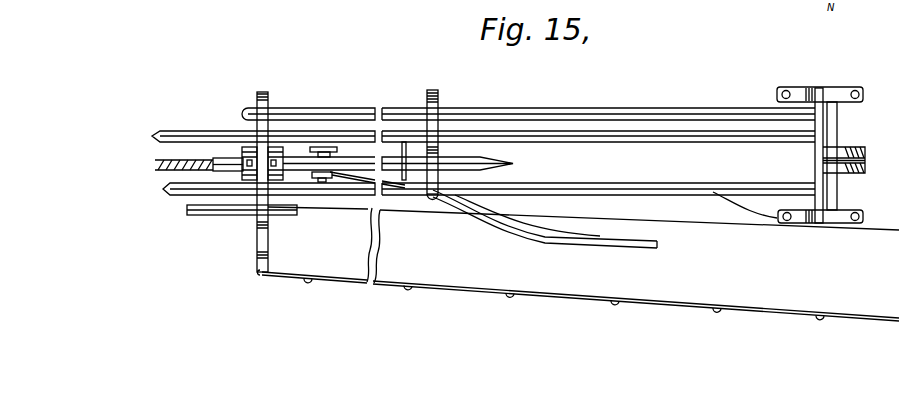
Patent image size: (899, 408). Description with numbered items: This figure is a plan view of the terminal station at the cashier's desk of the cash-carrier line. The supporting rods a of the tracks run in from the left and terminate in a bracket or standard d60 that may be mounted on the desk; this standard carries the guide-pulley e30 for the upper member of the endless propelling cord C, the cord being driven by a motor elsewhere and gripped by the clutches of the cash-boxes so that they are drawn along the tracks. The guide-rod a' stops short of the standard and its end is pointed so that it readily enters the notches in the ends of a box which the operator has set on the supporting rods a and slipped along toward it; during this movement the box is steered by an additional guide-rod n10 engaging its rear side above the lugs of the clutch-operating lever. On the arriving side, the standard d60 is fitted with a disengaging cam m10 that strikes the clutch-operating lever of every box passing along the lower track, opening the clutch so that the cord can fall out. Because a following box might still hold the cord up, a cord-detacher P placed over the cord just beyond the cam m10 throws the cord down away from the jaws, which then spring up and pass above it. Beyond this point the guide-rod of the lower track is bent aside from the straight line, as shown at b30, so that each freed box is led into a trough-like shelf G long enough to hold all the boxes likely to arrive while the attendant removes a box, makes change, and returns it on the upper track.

The trough-like shelf G is at (579, 264).
The bracket or standard d60 is at (246, 172).
The guide-pulley e30 is at (848, 147).
The additional guide-rod n10 is at (550, 100).
The supporting rails or rods a is at (480, 153).
The endless propelling cord C is at (157, 163).
The guide-rod a' is at (377, 157).
The cord-detacher P is at (337, 150).
The disengaging cam m10 is at (232, 215).
The turned-aside guide-rod portion b30 is at (591, 251).